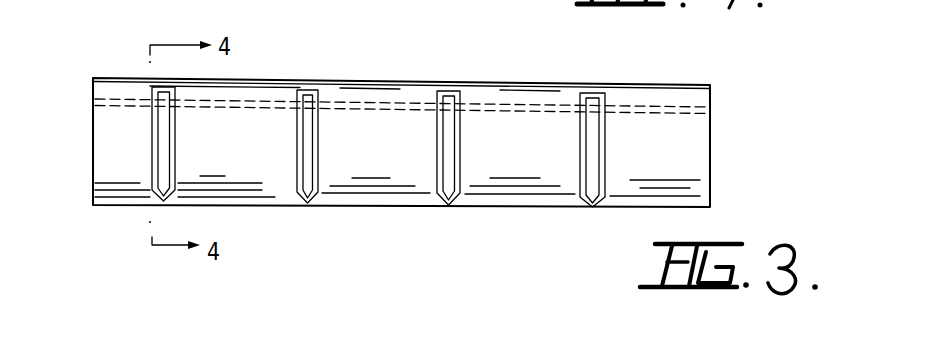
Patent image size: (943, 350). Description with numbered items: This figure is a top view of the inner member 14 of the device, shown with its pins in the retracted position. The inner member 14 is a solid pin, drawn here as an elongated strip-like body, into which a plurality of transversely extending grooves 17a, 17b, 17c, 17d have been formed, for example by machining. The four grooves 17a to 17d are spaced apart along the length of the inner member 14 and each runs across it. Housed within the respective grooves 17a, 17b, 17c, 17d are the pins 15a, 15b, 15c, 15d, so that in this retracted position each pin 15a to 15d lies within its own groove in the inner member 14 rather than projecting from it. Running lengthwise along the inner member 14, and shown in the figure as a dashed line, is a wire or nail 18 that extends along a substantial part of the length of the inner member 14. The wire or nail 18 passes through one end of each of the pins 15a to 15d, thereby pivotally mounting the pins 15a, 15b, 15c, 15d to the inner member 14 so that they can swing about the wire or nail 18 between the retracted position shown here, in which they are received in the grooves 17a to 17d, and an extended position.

The inner member 14 is at (700, 148).
The wire or nail 18 is at (340, 100).
The pin 15a is at (157, 140).
The pin 15b is at (314, 170).
The pin 15c is at (447, 174).
The pin 15d is at (588, 174).
The groove 17a is at (175, 140).
The groove 17b is at (318, 142).
The groove 17c is at (460, 143).
The groove 17d is at (604, 146).